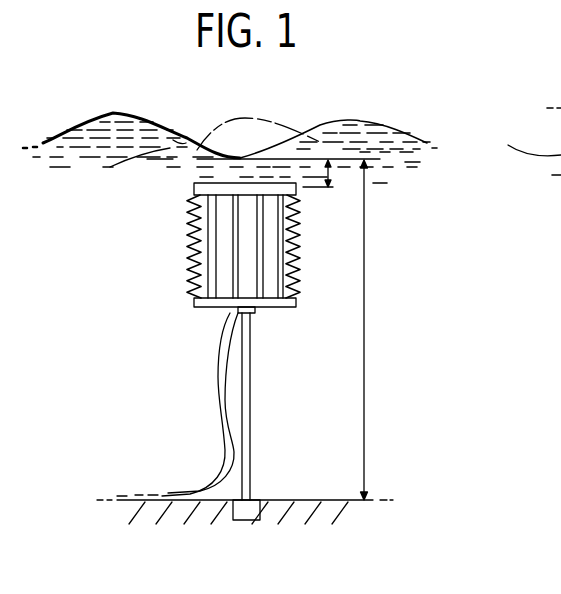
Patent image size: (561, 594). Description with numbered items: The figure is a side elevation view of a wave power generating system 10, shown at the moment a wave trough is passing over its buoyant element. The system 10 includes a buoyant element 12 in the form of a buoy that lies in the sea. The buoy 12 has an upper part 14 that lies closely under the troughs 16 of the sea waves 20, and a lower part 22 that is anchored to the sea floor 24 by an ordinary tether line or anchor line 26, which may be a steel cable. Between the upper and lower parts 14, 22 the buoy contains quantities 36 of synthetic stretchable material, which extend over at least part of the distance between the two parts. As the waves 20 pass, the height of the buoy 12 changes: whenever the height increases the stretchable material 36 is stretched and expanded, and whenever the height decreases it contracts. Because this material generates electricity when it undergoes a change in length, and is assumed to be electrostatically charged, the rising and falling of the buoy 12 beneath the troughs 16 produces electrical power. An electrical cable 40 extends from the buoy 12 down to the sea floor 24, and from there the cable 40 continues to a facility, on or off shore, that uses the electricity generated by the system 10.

The wave power generating system 10 is at (390, 248).
The buoyant element 12 is at (184, 249).
The upper part 14 is at (194, 184).
The troughs 16 is at (252, 157).
The sea waves 20 is at (113, 114).
The lower part 22 is at (194, 303).
The sea floor 24 is at (335, 500).
The anchor line 26 is at (252, 376).
The quantities of SSM 36 is at (283, 228).
The electrical cable 40 is at (220, 422).